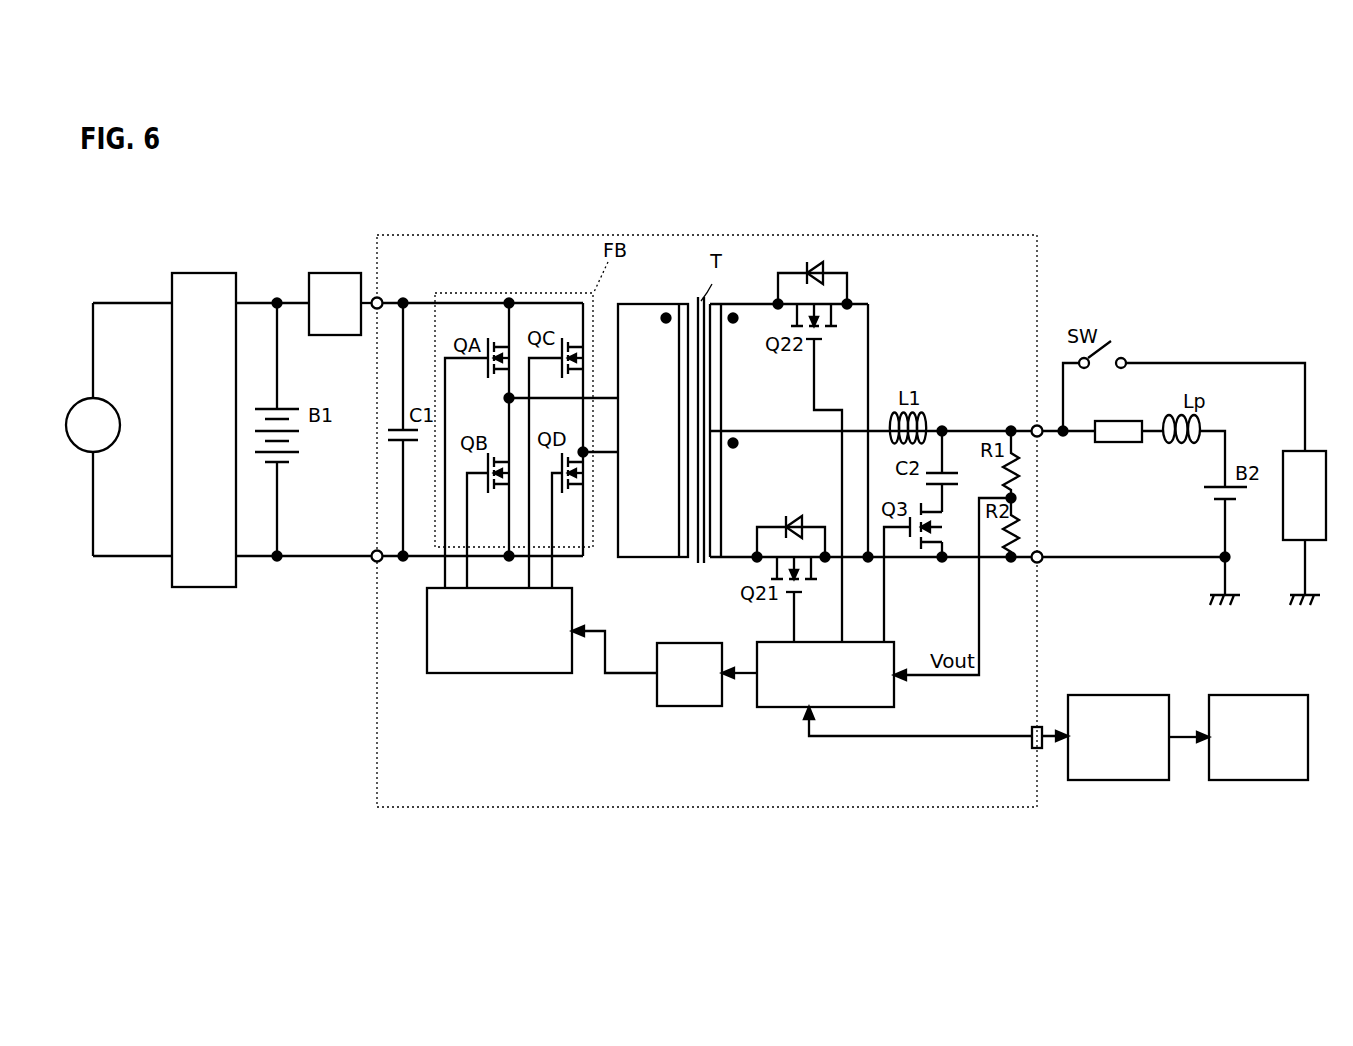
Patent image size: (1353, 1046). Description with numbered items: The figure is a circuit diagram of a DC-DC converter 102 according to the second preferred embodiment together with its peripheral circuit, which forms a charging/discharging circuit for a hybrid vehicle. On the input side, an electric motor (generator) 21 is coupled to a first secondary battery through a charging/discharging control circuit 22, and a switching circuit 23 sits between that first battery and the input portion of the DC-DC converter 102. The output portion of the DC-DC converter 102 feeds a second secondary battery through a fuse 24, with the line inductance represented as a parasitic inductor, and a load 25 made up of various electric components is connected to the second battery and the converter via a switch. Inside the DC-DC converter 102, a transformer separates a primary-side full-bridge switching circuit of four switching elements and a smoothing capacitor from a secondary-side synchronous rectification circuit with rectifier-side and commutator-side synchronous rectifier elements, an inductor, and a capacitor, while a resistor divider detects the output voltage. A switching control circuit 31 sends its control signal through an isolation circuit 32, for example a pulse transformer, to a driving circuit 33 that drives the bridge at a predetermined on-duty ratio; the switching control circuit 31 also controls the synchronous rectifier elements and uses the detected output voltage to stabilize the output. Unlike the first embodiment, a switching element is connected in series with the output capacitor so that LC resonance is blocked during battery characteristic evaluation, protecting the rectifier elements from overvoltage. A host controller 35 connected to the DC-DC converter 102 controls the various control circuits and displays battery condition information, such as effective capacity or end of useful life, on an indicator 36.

The electric motor (generator) 21 is at (78, 399).
The charging/discharging control circuit 22 is at (211, 270).
The switching circuit 23 is at (332, 270).
The fuse 24 is at (1118, 420).
The load 25 is at (1315, 451).
The switching control circuit 31 is at (890, 642).
The isolation circuit 32 is at (686, 643).
The driving circuit 33 is at (573, 588).
The host controller 35 is at (1158, 695).
The indicator 36 is at (1288, 695).
The DC-DC converter 102 is at (1003, 232).